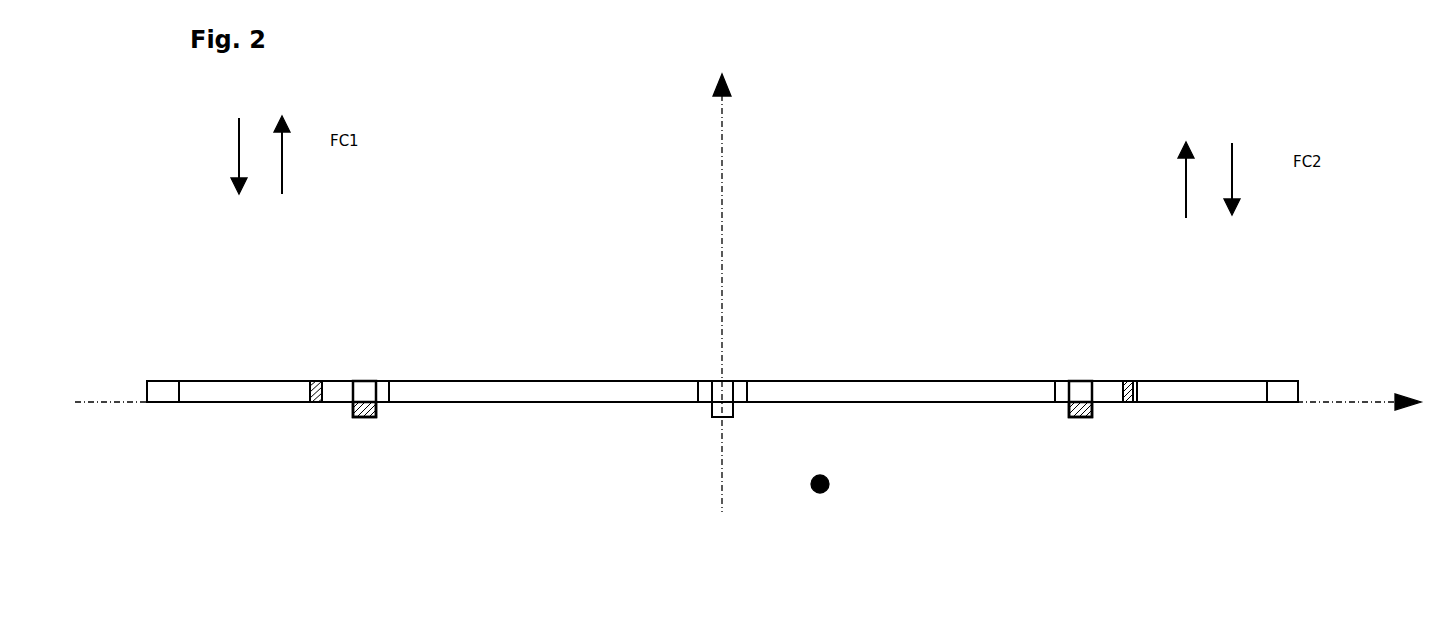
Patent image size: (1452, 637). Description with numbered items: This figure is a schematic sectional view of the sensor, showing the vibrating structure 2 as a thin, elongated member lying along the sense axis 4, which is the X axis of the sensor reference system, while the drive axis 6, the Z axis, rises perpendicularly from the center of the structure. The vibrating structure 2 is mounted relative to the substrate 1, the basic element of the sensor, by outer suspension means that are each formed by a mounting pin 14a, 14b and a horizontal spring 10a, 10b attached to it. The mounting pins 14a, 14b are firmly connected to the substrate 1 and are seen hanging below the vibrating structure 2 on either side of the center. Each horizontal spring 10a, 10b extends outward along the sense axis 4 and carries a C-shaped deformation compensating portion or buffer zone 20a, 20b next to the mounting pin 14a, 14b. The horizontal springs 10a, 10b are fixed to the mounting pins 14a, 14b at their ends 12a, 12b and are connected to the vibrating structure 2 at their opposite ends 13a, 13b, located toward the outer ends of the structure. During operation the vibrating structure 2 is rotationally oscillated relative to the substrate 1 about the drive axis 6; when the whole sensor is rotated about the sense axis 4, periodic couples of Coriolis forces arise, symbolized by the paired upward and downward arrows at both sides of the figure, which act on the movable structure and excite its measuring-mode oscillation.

The substrate 1 is at (826, 495).
The vibrating structure 2 is at (575, 376).
The sense axis 4 is at (1362, 406).
The drive axis 6 is at (728, 122).
The horizontal spring 10a is at (1230, 407).
The horizontal spring 10b is at (330, 406).
The end of horizontal spring 12a is at (1100, 378).
The end of horizontal spring 12b is at (350, 377).
The end of horizontal spring 13a is at (1247, 379).
The end of horizontal spring 13b is at (200, 378).
The mounting pin 14a is at (1082, 418).
The mounting pin 14b is at (367, 418).
The buffer zone 20a is at (1130, 378).
The buffer zone 20b is at (313, 376).